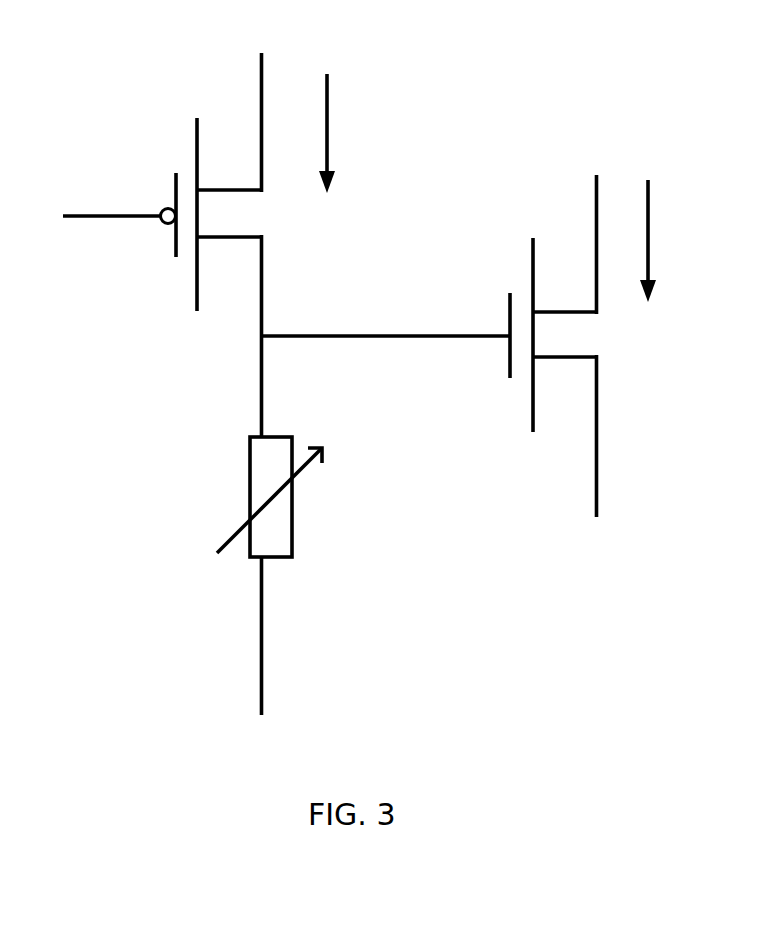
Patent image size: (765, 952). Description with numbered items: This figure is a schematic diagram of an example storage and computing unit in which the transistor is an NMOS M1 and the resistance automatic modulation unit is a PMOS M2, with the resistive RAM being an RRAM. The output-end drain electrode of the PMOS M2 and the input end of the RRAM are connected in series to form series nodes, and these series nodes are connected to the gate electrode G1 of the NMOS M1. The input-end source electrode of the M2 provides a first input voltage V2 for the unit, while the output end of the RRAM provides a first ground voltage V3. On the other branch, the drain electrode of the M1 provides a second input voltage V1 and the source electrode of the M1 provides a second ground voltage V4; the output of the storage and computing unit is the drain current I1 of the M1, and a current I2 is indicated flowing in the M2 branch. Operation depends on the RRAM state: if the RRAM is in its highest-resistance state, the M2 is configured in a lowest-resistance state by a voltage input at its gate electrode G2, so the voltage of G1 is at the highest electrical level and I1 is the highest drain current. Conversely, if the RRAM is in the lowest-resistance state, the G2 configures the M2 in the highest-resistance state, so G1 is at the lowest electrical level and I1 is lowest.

The PMOS M2 is at (239, 278).
The gate electrode of the M2 G2 is at (112, 199).
The first input voltage V2 is at (259, 106).
The current I2 is at (349, 133).
The NMOS M1 is at (585, 335).
The gate electrode of the M1 G1 is at (385, 320).
The second input voltage V1 is at (597, 224).
The second ground voltage V4 is at (606, 464).
The drain current I1 is at (662, 241).
The element RRAM is at (294, 497).
The first ground voltage V3 is at (269, 653).